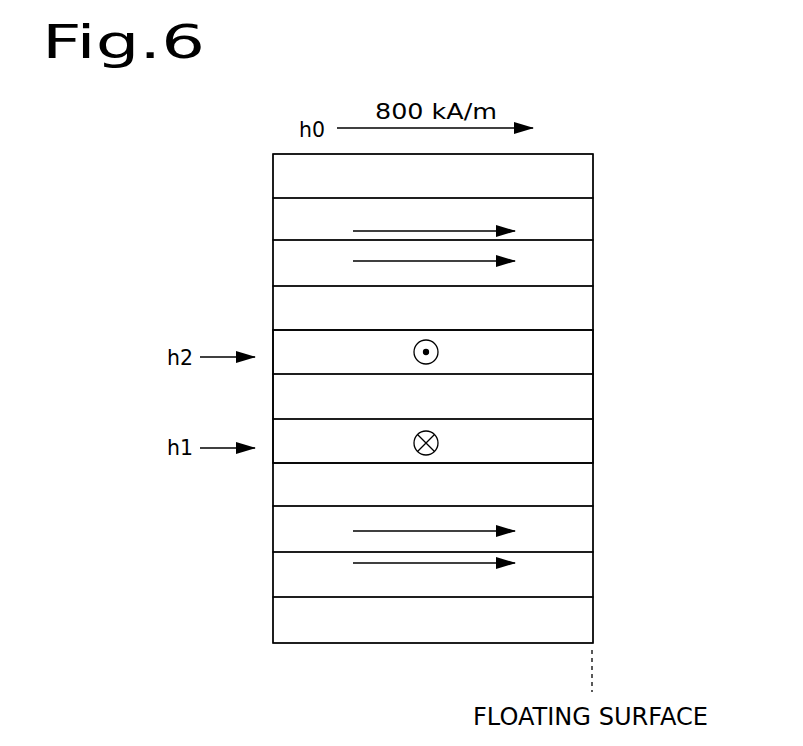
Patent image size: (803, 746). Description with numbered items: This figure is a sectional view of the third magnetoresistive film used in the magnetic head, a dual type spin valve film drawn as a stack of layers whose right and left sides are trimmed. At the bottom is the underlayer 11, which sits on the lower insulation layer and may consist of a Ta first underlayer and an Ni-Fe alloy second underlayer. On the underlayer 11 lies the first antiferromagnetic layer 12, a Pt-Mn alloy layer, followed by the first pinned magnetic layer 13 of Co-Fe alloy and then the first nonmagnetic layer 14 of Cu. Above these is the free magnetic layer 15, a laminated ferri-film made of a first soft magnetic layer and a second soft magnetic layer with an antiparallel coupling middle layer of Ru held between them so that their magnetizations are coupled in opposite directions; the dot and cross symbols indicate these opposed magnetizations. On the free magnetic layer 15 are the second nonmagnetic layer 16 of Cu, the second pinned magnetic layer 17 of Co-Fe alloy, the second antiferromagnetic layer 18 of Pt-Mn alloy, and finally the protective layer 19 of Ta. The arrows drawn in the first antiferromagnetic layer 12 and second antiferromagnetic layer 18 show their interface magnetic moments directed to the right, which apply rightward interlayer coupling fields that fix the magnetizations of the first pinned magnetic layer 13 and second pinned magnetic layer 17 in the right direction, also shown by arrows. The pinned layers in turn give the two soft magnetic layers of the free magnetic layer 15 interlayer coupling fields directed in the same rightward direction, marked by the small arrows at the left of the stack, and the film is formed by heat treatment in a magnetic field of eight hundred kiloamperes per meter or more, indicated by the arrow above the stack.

The underlayer 11 is at (580, 627).
The first antiferromagnetic layer 12 is at (580, 581).
The first pinned magnetic layer 13 is at (580, 536).
The first nonmagnetic layer 14 is at (580, 492).
The free magnetic layer 15 is at (528, 396).
The second nonmagnetic layer 16 is at (577, 314).
The second pinned magnetic layer 17 is at (575, 266).
The second antiferromagnetic layer 18 is at (577, 223).
The protective layer 19 is at (577, 181).